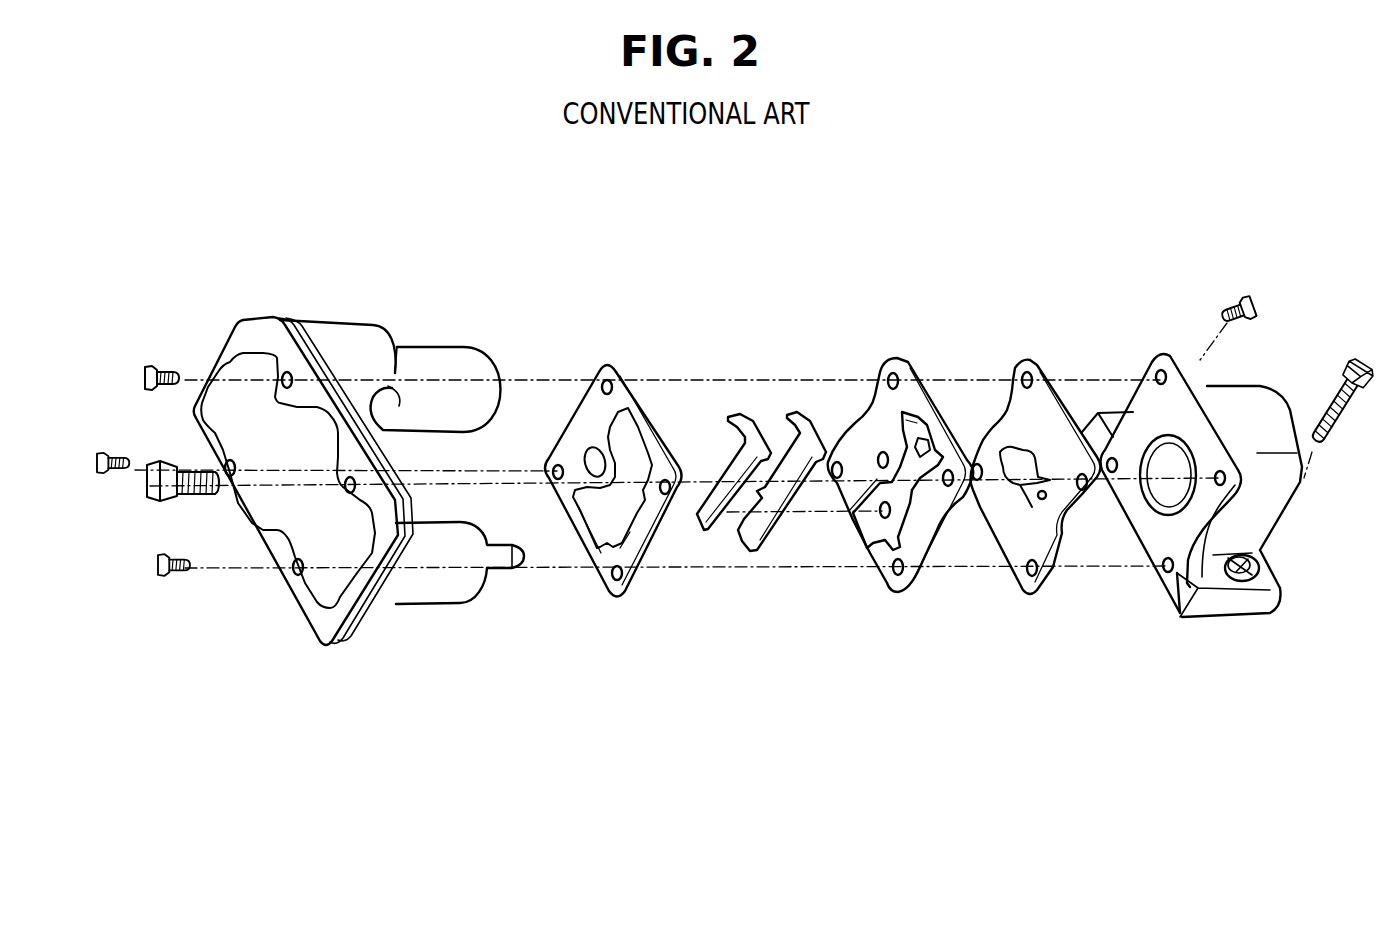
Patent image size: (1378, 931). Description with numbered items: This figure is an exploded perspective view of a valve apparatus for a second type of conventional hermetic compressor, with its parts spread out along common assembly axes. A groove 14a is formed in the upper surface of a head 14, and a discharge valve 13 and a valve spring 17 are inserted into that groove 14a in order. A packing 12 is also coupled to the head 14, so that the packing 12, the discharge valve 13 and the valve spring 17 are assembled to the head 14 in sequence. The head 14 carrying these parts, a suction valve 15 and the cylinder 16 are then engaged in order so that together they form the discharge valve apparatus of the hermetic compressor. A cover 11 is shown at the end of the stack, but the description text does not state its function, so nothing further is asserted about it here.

The cover 11 is at (328, 627).
The packing 12 is at (600, 577).
The discharge valve 13 is at (753, 540).
The head 14 is at (898, 583).
The groove 14a is at (863, 550).
The suction valve 15 is at (1032, 592).
The cylinder 16 is at (1203, 612).
The valve spring 17 is at (702, 530).